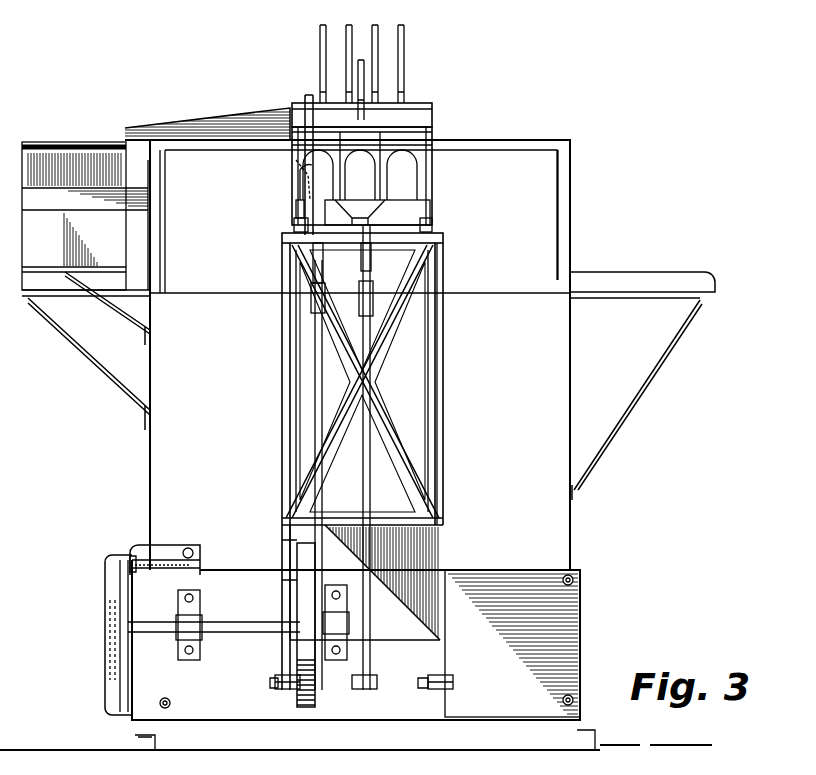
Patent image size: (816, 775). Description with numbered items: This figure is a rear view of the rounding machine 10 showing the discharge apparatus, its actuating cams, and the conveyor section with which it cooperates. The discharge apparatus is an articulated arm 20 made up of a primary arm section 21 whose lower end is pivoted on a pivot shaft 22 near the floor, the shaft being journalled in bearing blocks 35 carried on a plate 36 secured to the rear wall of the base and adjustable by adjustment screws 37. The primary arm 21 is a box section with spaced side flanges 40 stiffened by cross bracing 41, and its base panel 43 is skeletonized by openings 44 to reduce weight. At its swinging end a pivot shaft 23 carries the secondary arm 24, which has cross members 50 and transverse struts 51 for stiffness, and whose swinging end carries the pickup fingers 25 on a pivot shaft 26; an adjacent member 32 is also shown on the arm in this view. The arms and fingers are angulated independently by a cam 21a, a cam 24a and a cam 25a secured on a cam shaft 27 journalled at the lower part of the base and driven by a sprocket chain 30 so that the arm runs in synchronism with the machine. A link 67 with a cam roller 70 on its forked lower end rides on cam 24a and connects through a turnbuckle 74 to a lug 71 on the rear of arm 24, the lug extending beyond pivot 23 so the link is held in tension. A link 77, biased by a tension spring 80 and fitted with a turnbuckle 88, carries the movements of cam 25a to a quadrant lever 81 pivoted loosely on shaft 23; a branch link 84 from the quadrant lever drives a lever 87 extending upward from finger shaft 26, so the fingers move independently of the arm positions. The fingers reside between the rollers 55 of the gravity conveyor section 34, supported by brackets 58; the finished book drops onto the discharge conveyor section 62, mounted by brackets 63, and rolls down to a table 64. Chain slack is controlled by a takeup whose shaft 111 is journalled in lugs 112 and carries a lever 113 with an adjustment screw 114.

The machine body 10 is at (170, 463).
The articulated arm 20 is at (445, 347).
The primary arm section 21 is at (445, 376).
The cam for the primary arm 21a is at (297, 548).
The pivot shaft 22 is at (270, 684).
The pivot shaft of the secondary arm 23 is at (390, 245).
The secondary arm 24 is at (434, 179).
The cam for the secondary arm 24a is at (365, 607).
The pickup fingers 25 is at (408, 52).
The cam for the pickup fingers 25a is at (318, 715).
The pivot shaft of the fingers 26 is at (420, 102).
The cam shaft 27 is at (258, 625).
The sprocket chain 30 is at (128, 663).
The rod 32 is at (368, 88).
The gravity conveyor section 34 is at (242, 120).
The bearing blocks 35 is at (280, 676).
The plate 36 is at (497, 585).
The adjustment screws 37 is at (577, 578).
The side flanges 40 is at (282, 348).
The cross bracing 41 is at (325, 460).
The base panel 43 is at (392, 350).
The openings 44 is at (420, 437).
The cross members 50 is at (420, 140).
The transverse struts 51 is at (383, 165).
The rollers 55 is at (98, 150).
The brackets 58 is at (505, 140).
The discharge conveyor section 62 is at (58, 150).
The brackets 63 is at (58, 213).
The table 64 is at (58, 305).
The link 67 is at (372, 492).
The cam roller 70 is at (360, 690).
The lug 71 is at (372, 213).
The turnbuckle 74 is at (371, 281).
The link 77 is at (316, 380).
The tension spring 80 is at (300, 160).
The quadrant lever 81 is at (296, 212).
The branch link 84 is at (304, 182).
The lever 87 is at (305, 100).
The turnbuckle 88 is at (323, 284).
The shaft 111 is at (188, 575).
The lugs 112 is at (198, 568).
The lever 113 is at (165, 550).
The adjustment screw 114 is at (195, 550).